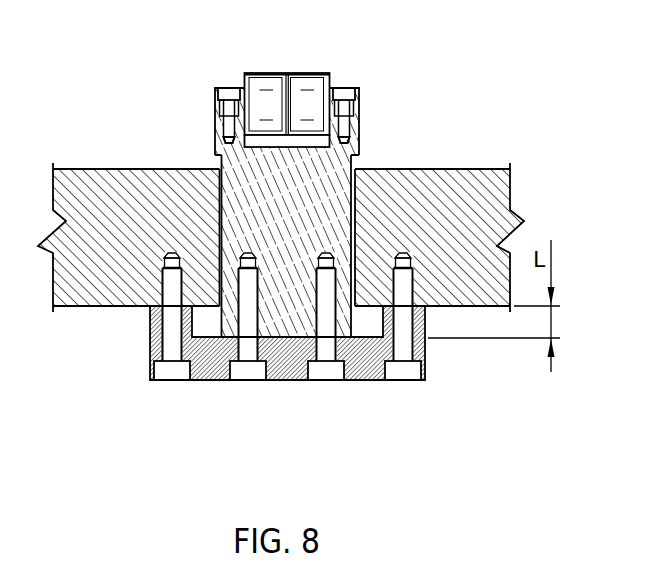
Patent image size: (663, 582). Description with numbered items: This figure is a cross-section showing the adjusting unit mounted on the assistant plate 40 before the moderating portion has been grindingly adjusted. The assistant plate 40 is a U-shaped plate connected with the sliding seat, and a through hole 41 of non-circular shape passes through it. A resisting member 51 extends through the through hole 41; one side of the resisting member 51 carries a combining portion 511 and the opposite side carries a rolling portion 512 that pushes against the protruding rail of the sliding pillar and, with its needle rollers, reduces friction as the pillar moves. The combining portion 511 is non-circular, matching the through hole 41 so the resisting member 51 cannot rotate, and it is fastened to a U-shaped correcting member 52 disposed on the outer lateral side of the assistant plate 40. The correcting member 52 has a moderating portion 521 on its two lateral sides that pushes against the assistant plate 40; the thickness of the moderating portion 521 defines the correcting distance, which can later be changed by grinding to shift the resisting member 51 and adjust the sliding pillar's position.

The assistant plate 40 is at (460, 146).
The through hole 41 is at (354, 236).
The resisting member 51 is at (232, 199).
The combining portion 511 is at (232, 192).
The rolling portion 512 is at (313, 80).
The correcting member 52 is at (200, 406).
The moderating portion 521 is at (157, 322).